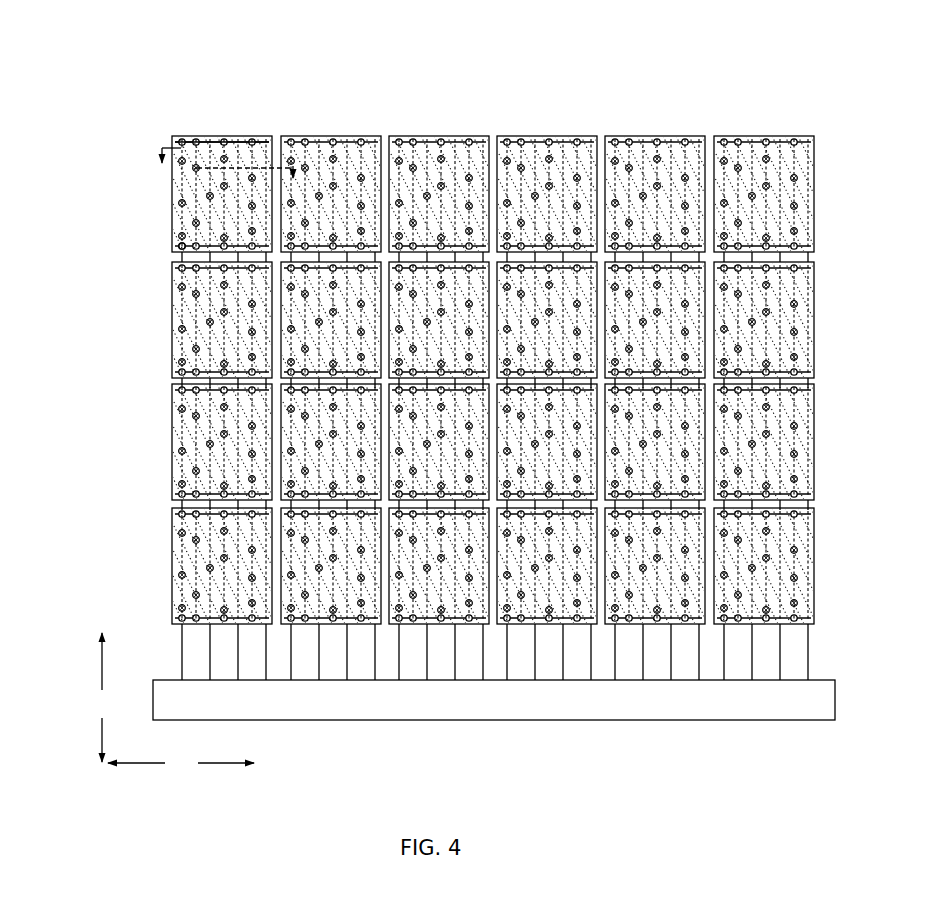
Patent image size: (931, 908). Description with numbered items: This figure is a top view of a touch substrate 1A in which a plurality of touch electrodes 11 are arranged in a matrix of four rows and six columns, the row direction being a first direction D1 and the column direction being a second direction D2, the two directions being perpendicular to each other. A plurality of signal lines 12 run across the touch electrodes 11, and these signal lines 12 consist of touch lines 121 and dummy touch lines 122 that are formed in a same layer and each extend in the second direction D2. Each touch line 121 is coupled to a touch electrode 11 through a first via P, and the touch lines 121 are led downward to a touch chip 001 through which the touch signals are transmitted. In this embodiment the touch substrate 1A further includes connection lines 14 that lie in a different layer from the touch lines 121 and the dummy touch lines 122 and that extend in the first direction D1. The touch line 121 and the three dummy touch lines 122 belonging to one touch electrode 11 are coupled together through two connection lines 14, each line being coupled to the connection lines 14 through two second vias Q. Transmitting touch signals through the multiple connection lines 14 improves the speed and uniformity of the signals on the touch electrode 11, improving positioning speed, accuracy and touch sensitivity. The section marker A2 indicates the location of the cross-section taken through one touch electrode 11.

The touch substrate 1A is at (742, 70).
The connection line 14 is at (218, 140).
The section line A2 is at (227, 172).
The first via P is at (172, 193).
The second via Q is at (180, 246).
The touch electrode 11 is at (172, 290).
The signal line 12 is at (66, 322).
The dummy touch line 122 is at (180, 334).
The touch line 121 is at (180, 360).
The touch chip 001 is at (163, 692).
The first direction D1 is at (181, 763).
The second direction D2 is at (100, 697).